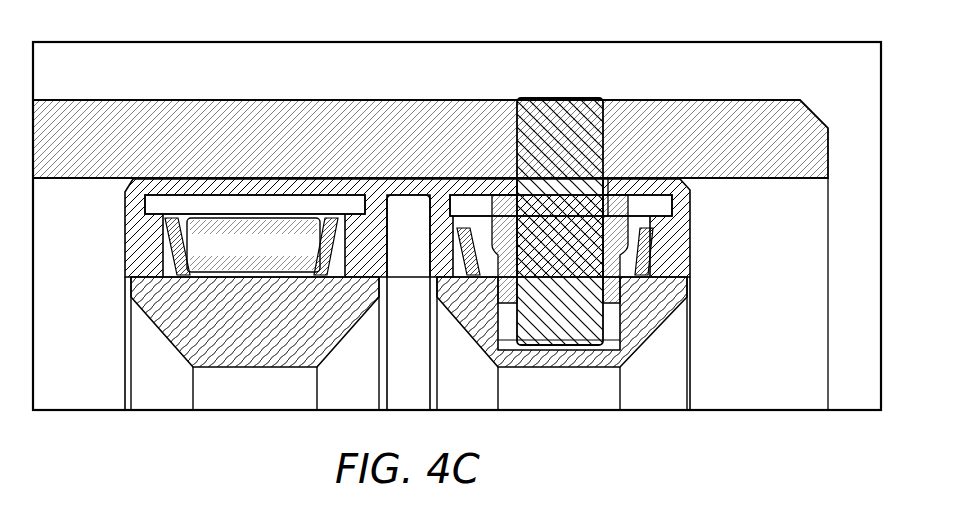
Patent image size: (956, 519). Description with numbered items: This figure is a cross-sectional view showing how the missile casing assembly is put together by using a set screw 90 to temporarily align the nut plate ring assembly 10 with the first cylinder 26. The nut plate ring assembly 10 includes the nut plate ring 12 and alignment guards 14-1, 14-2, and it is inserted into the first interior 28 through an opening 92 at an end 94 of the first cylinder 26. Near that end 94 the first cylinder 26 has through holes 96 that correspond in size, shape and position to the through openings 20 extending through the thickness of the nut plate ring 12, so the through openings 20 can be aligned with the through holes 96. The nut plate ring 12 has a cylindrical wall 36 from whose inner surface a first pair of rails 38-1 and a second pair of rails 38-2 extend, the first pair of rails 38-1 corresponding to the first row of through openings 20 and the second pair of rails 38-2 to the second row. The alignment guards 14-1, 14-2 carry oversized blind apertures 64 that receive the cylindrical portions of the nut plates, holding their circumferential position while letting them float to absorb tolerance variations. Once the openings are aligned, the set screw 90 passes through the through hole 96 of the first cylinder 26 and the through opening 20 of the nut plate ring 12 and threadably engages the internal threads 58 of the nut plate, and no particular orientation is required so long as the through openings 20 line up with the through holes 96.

The nut plate ring assembly 10 is at (693, 298).
The nut plate ring 12 is at (690, 237).
The alignment guard 14-1 is at (155, 330).
The alignment guard 14-2 is at (668, 318).
The through opening 20 is at (620, 177).
The first cylinder 26 is at (331, 100).
The first interior 28 is at (86, 207).
The cylindrical wall 36 is at (412, 193).
The first pair of rails 38-1 is at (124, 237).
The second pair of rails 38-2 is at (691, 265).
The internal threads 58 is at (588, 348).
The aperture 64 is at (612, 348).
The set screw 90 is at (557, 102).
The opening 92 is at (793, 283).
The end 94 is at (832, 147).
The through hole 96 is at (514, 134).